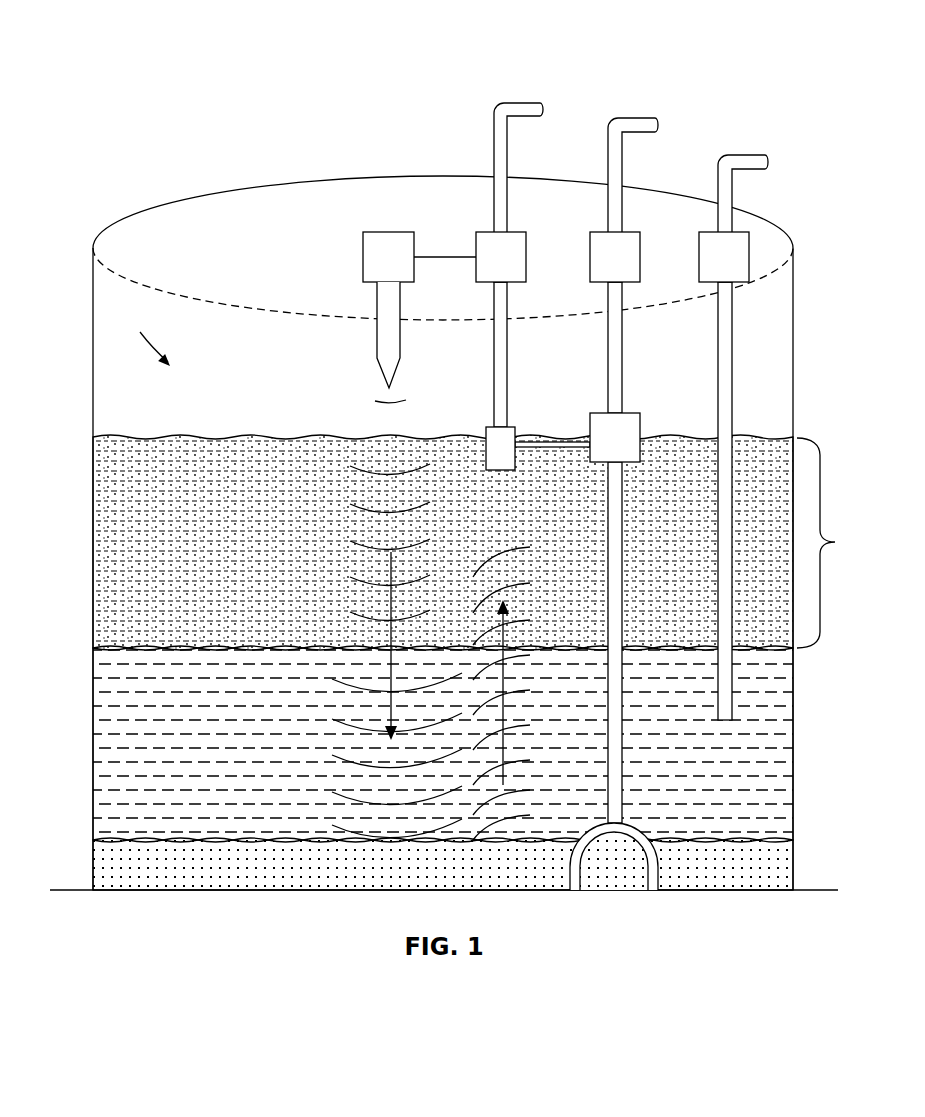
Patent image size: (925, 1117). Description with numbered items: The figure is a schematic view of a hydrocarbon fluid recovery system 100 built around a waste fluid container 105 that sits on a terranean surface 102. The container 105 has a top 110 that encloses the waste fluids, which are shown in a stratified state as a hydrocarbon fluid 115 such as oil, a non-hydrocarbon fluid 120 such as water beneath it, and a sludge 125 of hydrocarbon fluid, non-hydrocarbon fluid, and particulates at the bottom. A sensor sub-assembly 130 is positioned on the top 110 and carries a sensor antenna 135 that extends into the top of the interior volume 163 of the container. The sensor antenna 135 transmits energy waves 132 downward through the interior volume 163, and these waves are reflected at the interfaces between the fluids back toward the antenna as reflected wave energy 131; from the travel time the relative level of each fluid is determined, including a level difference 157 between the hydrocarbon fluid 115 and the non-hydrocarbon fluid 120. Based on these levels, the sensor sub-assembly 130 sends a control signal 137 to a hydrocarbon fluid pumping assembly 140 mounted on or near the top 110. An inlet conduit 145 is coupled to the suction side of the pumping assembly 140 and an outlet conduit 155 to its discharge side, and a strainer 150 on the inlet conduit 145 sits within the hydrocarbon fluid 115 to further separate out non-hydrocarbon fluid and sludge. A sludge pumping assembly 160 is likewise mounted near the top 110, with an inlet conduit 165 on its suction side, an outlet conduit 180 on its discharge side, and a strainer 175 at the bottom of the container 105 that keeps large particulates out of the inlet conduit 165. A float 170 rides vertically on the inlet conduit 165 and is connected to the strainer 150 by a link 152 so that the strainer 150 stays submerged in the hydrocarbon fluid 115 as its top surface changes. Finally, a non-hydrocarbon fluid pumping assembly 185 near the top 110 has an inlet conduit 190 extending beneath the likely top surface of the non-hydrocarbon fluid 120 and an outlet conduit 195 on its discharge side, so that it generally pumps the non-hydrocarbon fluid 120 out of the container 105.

The hydrocarbon fluid recovery system 100 is at (142, 68).
The terranean surface 102 is at (66, 893).
The waste fluid container 105 is at (92, 342).
The top 110 is at (207, 208).
The hydrocarbon fluid 115 is at (127, 437).
The non-hydrocarbon fluid 120 is at (130, 648).
The sludge 125 is at (130, 840).
The sensor sub-assembly 130 is at (390, 232).
The reflected wave energy 131 is at (534, 575).
The energy waves 132 is at (373, 398).
The sensor antenna 135 is at (402, 338).
The control signal 137 is at (437, 257).
The hydrocarbon fluid pumping assembly 140 is at (513, 232).
The inlet conduit 145 is at (509, 349).
The strainer 150 is at (483, 452).
The connecting conduit 152 is at (553, 449).
The outlet conduit 155 is at (518, 101).
The level difference 157 is at (839, 543).
The sludge pumping assembly 160 is at (630, 232).
The interior volume 163 is at (146, 337).
The inlet conduit 165 is at (633, 790).
The float 170 is at (636, 412).
The strainer 175 is at (570, 868).
The outlet conduit 180 is at (634, 118).
The non-hydrocarbon fluid pumping assembly 185 is at (745, 232).
The inlet conduit 190 is at (733, 371).
The outlet conduit 195 is at (747, 155).